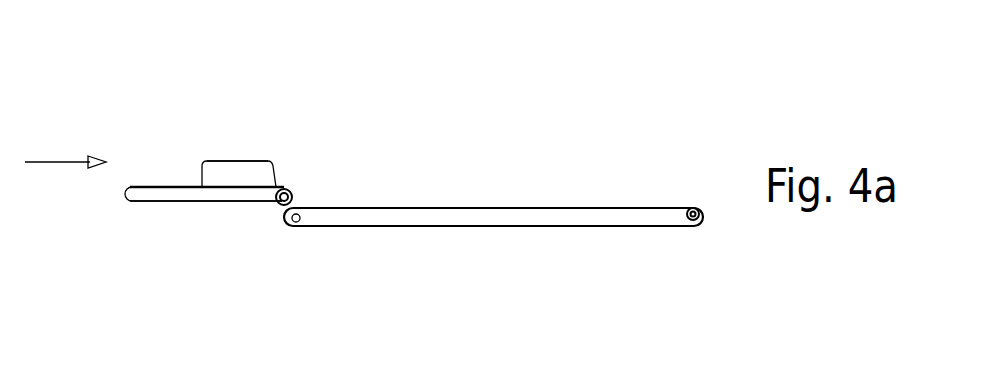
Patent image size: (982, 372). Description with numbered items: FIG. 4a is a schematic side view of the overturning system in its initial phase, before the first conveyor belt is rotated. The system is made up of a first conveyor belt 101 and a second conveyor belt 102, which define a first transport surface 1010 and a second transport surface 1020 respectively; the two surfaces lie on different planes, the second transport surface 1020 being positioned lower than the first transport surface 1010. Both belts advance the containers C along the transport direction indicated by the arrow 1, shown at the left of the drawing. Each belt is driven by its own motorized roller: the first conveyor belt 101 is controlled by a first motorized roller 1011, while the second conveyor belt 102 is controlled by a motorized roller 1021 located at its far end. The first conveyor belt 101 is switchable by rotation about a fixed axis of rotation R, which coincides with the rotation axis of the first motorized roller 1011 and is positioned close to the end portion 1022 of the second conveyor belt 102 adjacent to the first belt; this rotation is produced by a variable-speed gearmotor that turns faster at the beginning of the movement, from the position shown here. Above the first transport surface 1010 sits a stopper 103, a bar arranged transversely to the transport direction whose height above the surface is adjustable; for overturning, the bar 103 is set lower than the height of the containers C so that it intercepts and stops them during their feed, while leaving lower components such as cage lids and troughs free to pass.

The insertion direction 1 is at (65, 146).
The first conveyor belt 101 is at (217, 203).
The first transport surface 1010 is at (193, 186).
The first motorized roller 1011 is at (267, 202).
The stopper 103 is at (273, 163).
The containers C is at (262, 161).
The fixed axis of rotation R is at (282, 210).
The second conveyor belt 102 is at (610, 214).
The second transport surface 1020 is at (523, 208).
The end portion of the second conveyor belt 1022 is at (341, 224).
The motorized roller 1021 is at (687, 228).